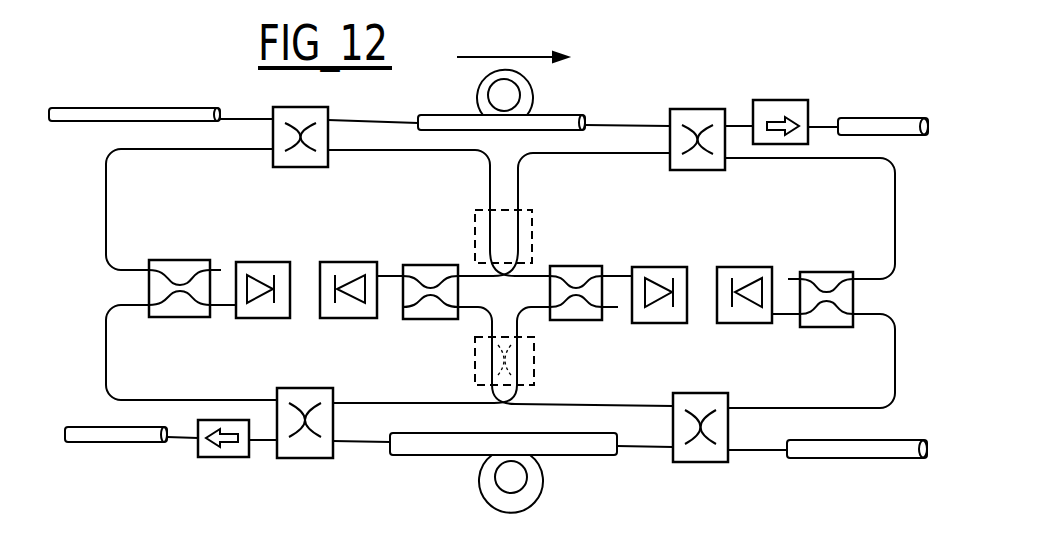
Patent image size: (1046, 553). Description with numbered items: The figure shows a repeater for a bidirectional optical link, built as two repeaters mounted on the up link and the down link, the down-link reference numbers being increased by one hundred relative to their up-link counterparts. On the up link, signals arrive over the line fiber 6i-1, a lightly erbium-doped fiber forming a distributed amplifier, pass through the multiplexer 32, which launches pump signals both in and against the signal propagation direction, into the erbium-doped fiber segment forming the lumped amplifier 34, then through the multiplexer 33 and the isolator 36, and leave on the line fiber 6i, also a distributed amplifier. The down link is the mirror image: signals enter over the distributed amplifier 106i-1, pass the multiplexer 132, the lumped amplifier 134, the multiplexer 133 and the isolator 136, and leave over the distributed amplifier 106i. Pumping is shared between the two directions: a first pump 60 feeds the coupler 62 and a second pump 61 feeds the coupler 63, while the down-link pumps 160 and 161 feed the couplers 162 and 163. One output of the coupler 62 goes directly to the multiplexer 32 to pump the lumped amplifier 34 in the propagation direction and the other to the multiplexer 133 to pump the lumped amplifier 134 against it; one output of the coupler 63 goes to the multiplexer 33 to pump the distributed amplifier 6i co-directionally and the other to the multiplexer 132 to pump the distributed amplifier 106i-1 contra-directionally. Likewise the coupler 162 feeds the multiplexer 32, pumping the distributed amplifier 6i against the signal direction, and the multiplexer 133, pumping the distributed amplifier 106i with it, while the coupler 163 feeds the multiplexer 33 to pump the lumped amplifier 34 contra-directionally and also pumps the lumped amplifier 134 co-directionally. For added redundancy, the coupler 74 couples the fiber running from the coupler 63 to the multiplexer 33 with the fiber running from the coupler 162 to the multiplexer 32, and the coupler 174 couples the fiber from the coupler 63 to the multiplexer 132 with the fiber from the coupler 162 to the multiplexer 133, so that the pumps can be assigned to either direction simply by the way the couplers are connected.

The line fiber 6i-1 is at (130, 108).
The multiplexer 32 is at (302, 107).
The lumped amplifier 34 is at (445, 115).
The multiplexer 33 is at (696, 109).
The isolator 36 is at (782, 100).
The distributed amplifier 6i is at (880, 118).
The coupler 62 is at (168, 260).
The first pump 60 is at (260, 262).
The second pump 61 is at (347, 262).
The coupler 63 is at (421, 265).
The coupler 74 is at (475, 217).
The coupler 162 is at (574, 266).
The pump 160 is at (660, 267).
The pump 161 is at (745, 267).
The coupler 163 is at (825, 272).
The coupler 174 is at (475, 352).
The distributed amplifier 106i is at (112, 443).
The isolator 136 is at (222, 457).
The multiplexer 133 is at (302, 458).
The lumped amplifier 134 is at (500, 513).
The multiplexer 132 is at (700, 462).
The distributed amplifier 106i-1 is at (843, 458).